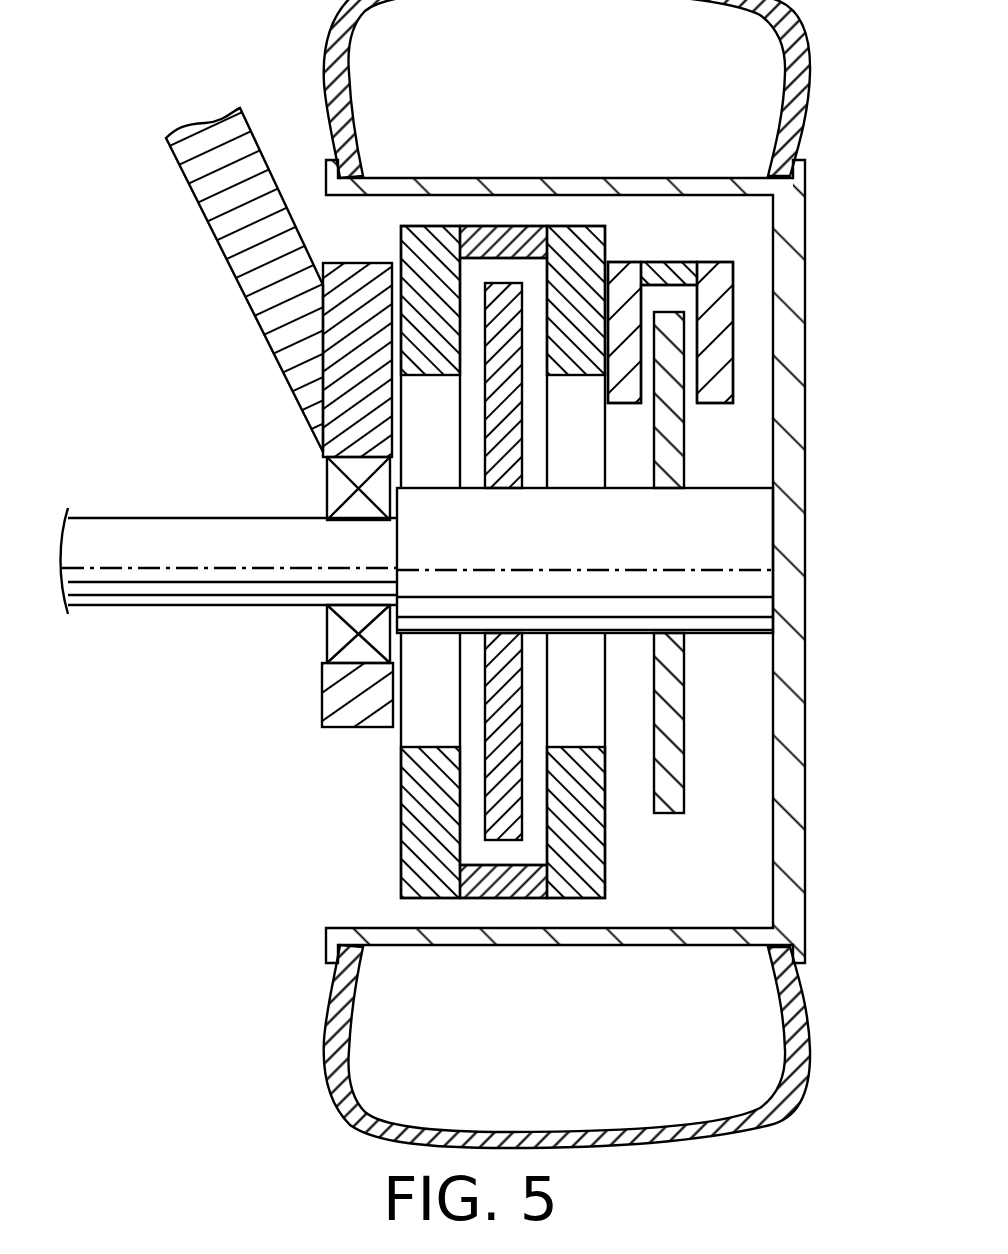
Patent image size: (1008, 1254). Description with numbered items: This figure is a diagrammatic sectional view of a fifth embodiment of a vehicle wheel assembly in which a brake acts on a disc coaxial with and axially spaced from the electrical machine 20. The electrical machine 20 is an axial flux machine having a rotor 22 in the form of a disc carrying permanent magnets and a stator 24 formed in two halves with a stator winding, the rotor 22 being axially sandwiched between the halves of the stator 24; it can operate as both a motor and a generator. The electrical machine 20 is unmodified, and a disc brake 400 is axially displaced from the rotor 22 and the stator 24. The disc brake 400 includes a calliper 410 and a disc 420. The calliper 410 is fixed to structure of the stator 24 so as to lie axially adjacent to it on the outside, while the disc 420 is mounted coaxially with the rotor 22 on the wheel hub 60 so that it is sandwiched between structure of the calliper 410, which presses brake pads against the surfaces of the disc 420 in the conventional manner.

The electrical machine 20 is at (383, 235).
The rotor 22 is at (484, 435).
The stator 24 is at (605, 240).
The wheel hub 60 is at (755, 522).
The disc brake 400 is at (749, 517).
The calliper 410 is at (733, 337).
The disc 420 is at (684, 447).